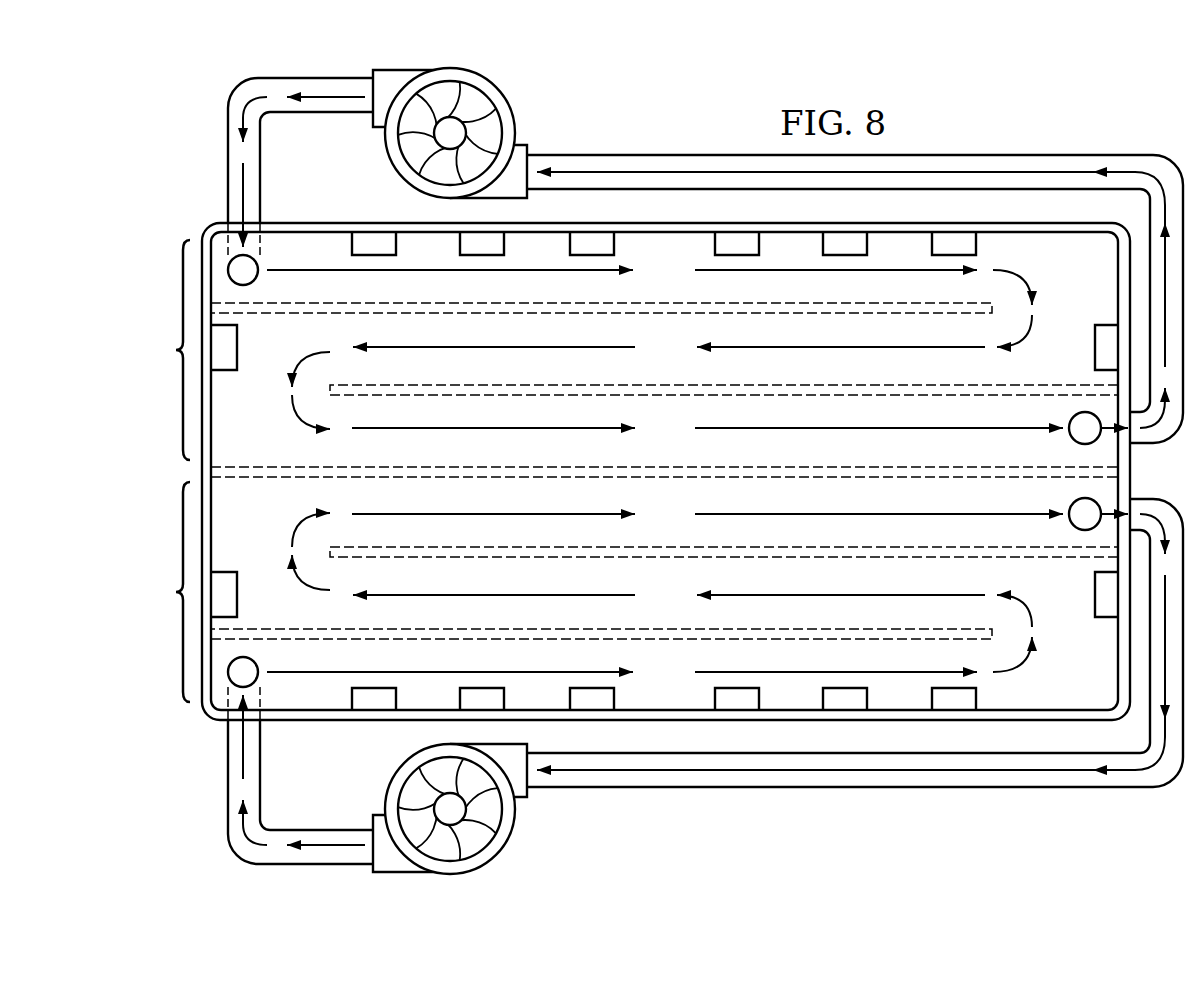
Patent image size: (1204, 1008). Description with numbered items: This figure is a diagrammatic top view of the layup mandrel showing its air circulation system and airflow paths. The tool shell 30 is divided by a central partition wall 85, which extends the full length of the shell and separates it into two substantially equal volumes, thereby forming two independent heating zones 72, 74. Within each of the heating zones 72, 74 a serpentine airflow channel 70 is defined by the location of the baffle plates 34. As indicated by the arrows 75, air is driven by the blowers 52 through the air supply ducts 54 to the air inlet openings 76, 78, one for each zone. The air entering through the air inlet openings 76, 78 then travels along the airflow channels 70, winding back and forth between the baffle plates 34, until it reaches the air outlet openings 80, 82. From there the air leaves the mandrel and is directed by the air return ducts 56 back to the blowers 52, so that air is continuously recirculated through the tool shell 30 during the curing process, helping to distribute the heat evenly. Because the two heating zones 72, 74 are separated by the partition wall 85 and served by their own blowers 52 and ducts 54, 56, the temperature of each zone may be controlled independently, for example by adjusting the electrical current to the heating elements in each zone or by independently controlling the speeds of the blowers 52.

The tool shell 30 is at (350, 221).
The baffle plates 34 is at (682, 316).
The blowers 52 is at (485, 74).
The air supply duct 54 is at (228, 165).
The air return duct 56 is at (975, 155).
The serpentine airflow channel 70 is at (270, 438).
The independent heating zone 72 is at (166, 350).
The independent heating zone 74 is at (166, 592).
The arrows 75 is at (488, 346).
The air inlet opening 76 is at (246, 282).
The air inlet opening 78 is at (246, 660).
The air outlet opening 80 is at (1085, 412).
The air outlet opening 82 is at (1085, 530).
The central partition wall 85 is at (682, 479).